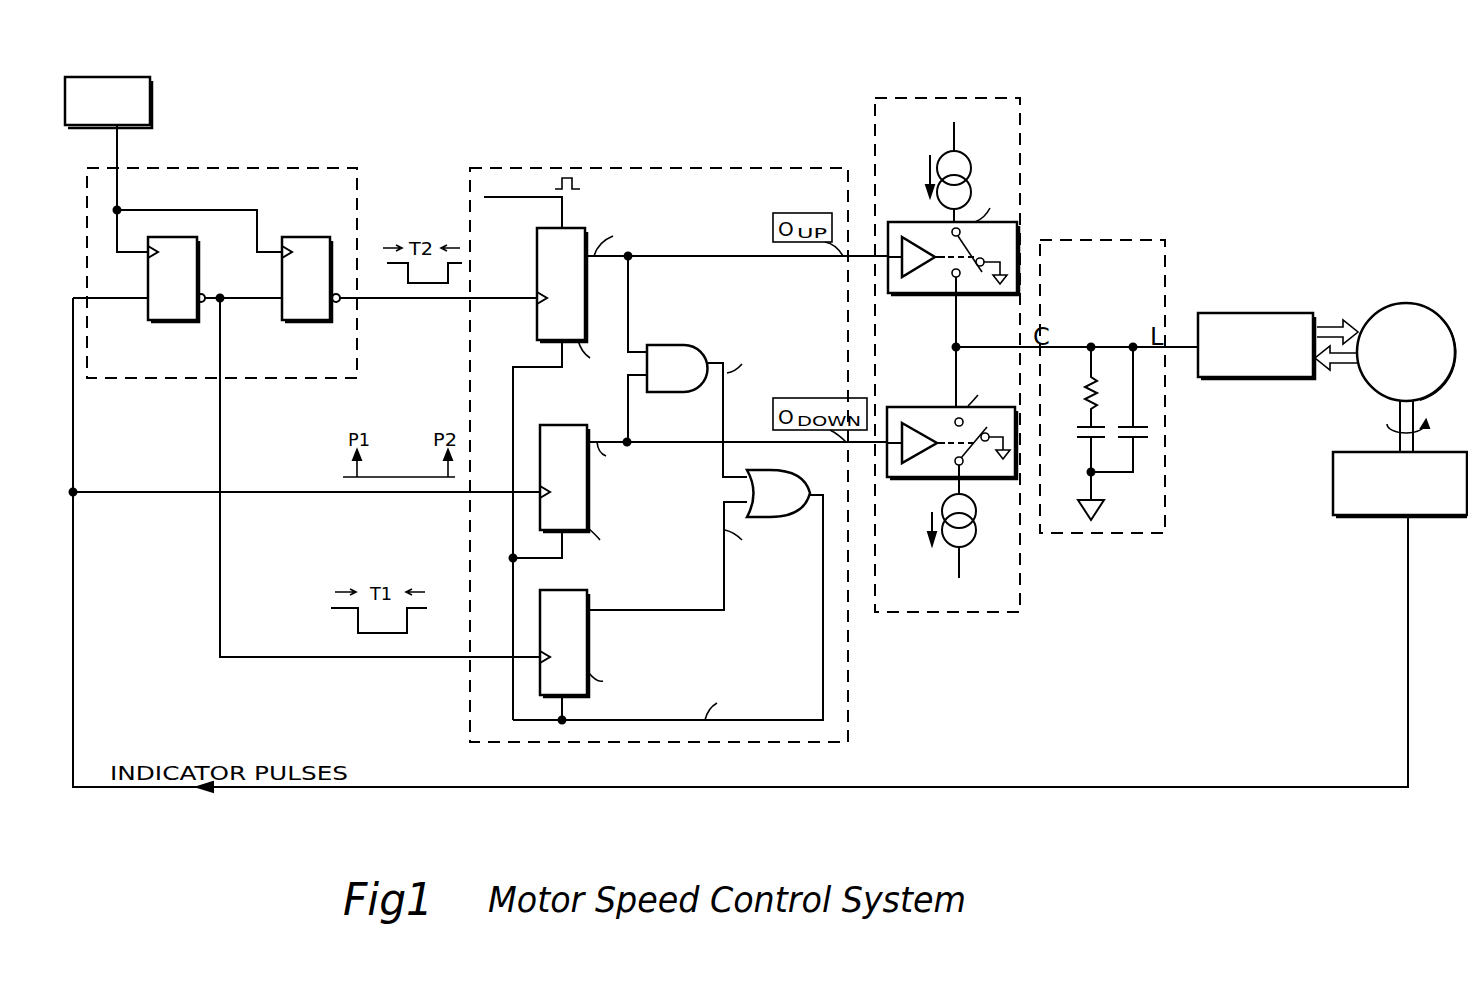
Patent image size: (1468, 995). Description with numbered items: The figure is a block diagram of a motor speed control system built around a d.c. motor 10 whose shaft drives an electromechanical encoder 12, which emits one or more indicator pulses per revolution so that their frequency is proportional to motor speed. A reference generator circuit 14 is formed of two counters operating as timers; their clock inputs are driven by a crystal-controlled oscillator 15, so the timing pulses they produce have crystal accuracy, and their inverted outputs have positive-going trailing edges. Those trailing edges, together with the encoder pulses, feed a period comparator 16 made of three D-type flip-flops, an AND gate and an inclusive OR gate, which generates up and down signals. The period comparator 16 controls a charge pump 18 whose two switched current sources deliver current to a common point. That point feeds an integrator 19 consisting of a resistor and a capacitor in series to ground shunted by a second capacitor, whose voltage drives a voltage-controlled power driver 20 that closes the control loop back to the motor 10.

The d.c. motor 10 is at (1428, 305).
The electromechanical encoder 12 is at (1360, 452).
The reference generator circuit 14 is at (190, 167).
The crystal-controlled oscillator 15 is at (133, 77).
The period comparator 16 is at (571, 166).
The charge pump 18 is at (940, 97).
The integrator 19 is at (1083, 240).
The power driver 20 is at (1237, 313).